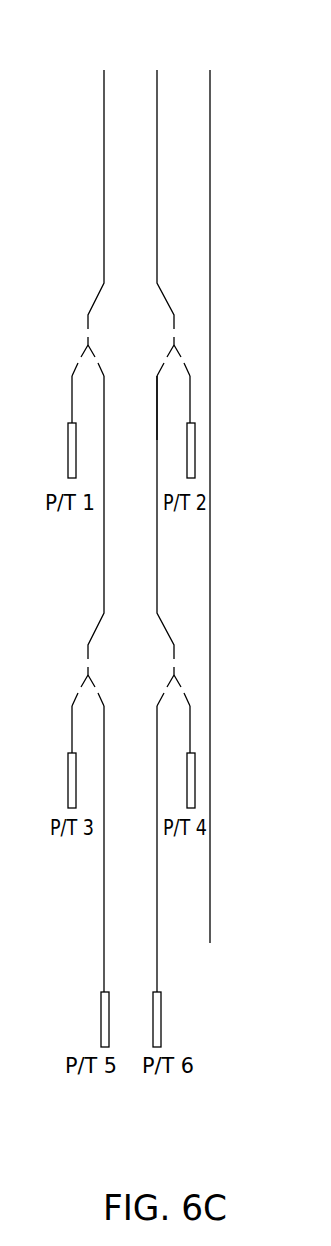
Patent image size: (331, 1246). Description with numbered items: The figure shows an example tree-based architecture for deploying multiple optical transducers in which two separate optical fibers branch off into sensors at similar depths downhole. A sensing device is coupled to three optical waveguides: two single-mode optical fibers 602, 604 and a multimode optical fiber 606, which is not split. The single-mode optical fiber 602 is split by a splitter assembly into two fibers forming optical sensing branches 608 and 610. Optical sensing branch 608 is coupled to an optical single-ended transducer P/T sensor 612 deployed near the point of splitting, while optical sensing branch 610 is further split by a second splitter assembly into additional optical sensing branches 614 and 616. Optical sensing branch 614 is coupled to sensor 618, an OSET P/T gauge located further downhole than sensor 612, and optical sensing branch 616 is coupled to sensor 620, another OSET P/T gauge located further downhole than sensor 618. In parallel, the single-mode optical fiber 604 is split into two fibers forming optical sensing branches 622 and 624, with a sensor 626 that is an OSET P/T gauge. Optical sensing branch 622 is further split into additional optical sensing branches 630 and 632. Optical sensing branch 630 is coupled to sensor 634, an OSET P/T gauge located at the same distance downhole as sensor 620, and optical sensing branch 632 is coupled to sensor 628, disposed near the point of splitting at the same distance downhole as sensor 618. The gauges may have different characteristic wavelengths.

The single-mode optical fiber 602 is at (103, 345).
The single-mode optical fiber 604 is at (157, 345).
The multimode optical fiber 606 is at (212, 479).
The optical sensing branch 608 is at (72, 376).
The optical sensing branch 610 is at (105, 376).
The OSET P/T sensor 612 is at (68, 453).
The optical sensing branch 614 is at (72, 706).
The optical sensing branch 616 is at (105, 706).
The sensor 618 is at (68, 783).
The sensor 620 is at (101, 1022).
The optical sensing branch 622 is at (157, 435).
The optical sensing branch 624 is at (190, 376).
The sensor 626 is at (194, 445).
The sensor 628 is at (194, 775).
The optical sensing branch 630 is at (157, 785).
The optical sensing branch 632 is at (190, 706).
The sensor 634 is at (161, 1022).